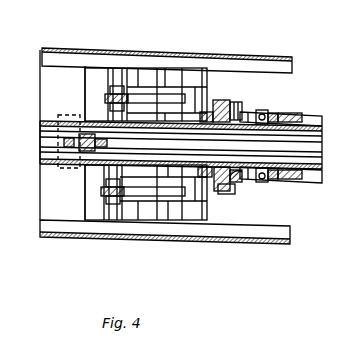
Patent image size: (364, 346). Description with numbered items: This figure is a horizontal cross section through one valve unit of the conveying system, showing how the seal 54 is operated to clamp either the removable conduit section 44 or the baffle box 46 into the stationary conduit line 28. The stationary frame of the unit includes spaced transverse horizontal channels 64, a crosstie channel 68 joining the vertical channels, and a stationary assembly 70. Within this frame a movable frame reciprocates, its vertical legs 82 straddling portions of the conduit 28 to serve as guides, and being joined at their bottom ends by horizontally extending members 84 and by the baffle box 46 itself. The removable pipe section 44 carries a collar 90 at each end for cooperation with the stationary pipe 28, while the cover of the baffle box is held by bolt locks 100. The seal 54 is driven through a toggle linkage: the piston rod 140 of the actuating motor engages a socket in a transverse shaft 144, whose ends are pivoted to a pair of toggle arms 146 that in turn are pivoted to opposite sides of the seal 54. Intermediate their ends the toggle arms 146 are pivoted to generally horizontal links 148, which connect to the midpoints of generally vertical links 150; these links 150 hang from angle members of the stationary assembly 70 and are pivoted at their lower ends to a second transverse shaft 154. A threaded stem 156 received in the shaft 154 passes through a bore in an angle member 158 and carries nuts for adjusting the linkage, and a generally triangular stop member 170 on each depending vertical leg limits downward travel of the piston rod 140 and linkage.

The conduit line 28 is at (38, 167).
The removable conduit section 44 is at (322, 149).
The baffle box 46 is at (322, 118).
The seal 54 is at (236, 184).
The transverse horizontal channels 64 is at (264, 57).
The crosstie channel 68 is at (140, 223).
The stationary assembly 70 is at (43, 74).
The vertical legs 82 is at (221, 110).
The horizontally extending members 84 is at (222, 113).
The collar 90 is at (244, 183).
The bolt locks 100 is at (284, 182).
The piston rod 140 is at (206, 223).
The transverse shaft 144 is at (146, 222).
The toggle arms 146 is at (201, 100).
The horizontally extending links 148 is at (127, 90).
The vertically extending links 150 is at (106, 96).
The transverse shaft 154 is at (104, 178).
The threaded stem 156 is at (100, 134).
The angle member 158 is at (82, 116).
The stop member 170 is at (164, 75).